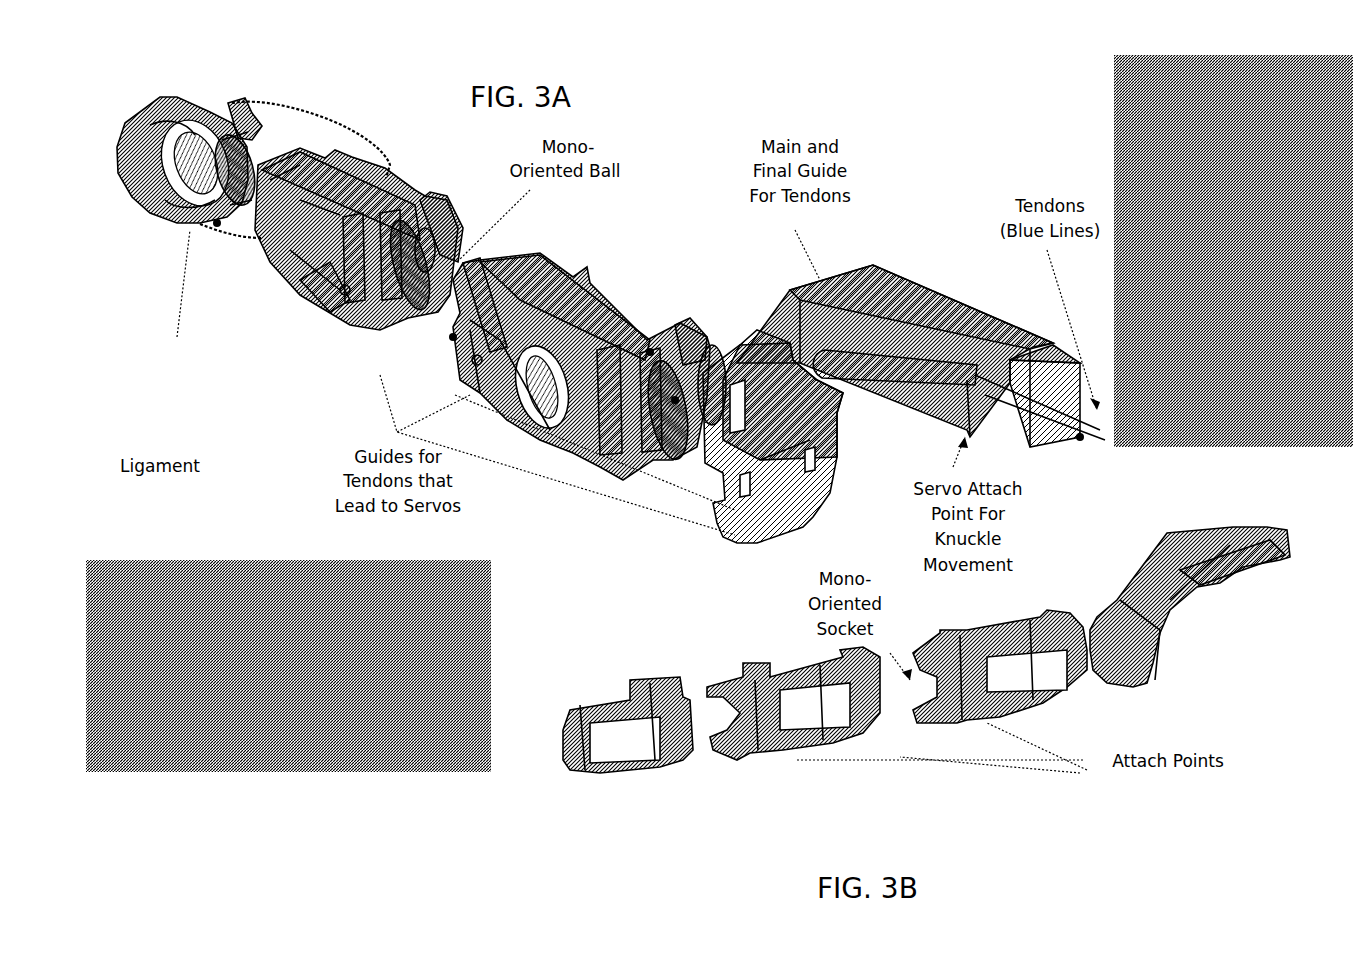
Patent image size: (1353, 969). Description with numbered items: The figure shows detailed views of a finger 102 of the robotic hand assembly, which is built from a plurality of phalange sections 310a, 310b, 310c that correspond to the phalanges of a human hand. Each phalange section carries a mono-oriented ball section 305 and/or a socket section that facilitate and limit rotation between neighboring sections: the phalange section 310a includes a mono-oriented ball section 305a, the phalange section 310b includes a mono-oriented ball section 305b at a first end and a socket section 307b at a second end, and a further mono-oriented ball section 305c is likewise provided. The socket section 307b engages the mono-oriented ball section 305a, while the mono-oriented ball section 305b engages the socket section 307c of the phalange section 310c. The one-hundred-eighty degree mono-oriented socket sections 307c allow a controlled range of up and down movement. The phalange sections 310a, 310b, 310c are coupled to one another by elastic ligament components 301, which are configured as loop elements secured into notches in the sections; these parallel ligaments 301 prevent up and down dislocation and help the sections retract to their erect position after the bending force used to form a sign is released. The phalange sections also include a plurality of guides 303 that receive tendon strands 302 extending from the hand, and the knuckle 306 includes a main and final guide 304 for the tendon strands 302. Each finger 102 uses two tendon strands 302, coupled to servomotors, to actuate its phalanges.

In FIG. 3A, the finger 102 is at (880, 152).
In FIG. 3B, the finger 102 is at (780, 795).
In FIG. 3A, the elastic ligament component 301 is at (230, 100).
In FIG. 3A, the tendon strand 302 is at (217, 223).
In FIG. 3A, the guide 303 is at (345, 290).
In FIG. 3A, the main and final guide 304 is at (853, 358).
In FIG. 3A, the mono-oriented ball section 305 is at (418, 240).
In FIG. 3A, the mono-oriented ball section 305a is at (218, 180).
In FIG. 3A, the mono-oriented ball section 305b is at (373, 305).
In FIG. 3A, the mono-oriented ball section 305c is at (662, 455).
In FIG. 3A, the knuckle 306 is at (973, 320).
In FIG. 3B, the socket section 307b is at (737, 737).
In FIG. 3B, the socket section 307c is at (917, 713).
In FIG. 3A, the phalange section 310a is at (140, 122).
In FIG. 3A, the phalange section 310b is at (380, 202).
In FIG. 3A, the phalange section 310c is at (597, 317).